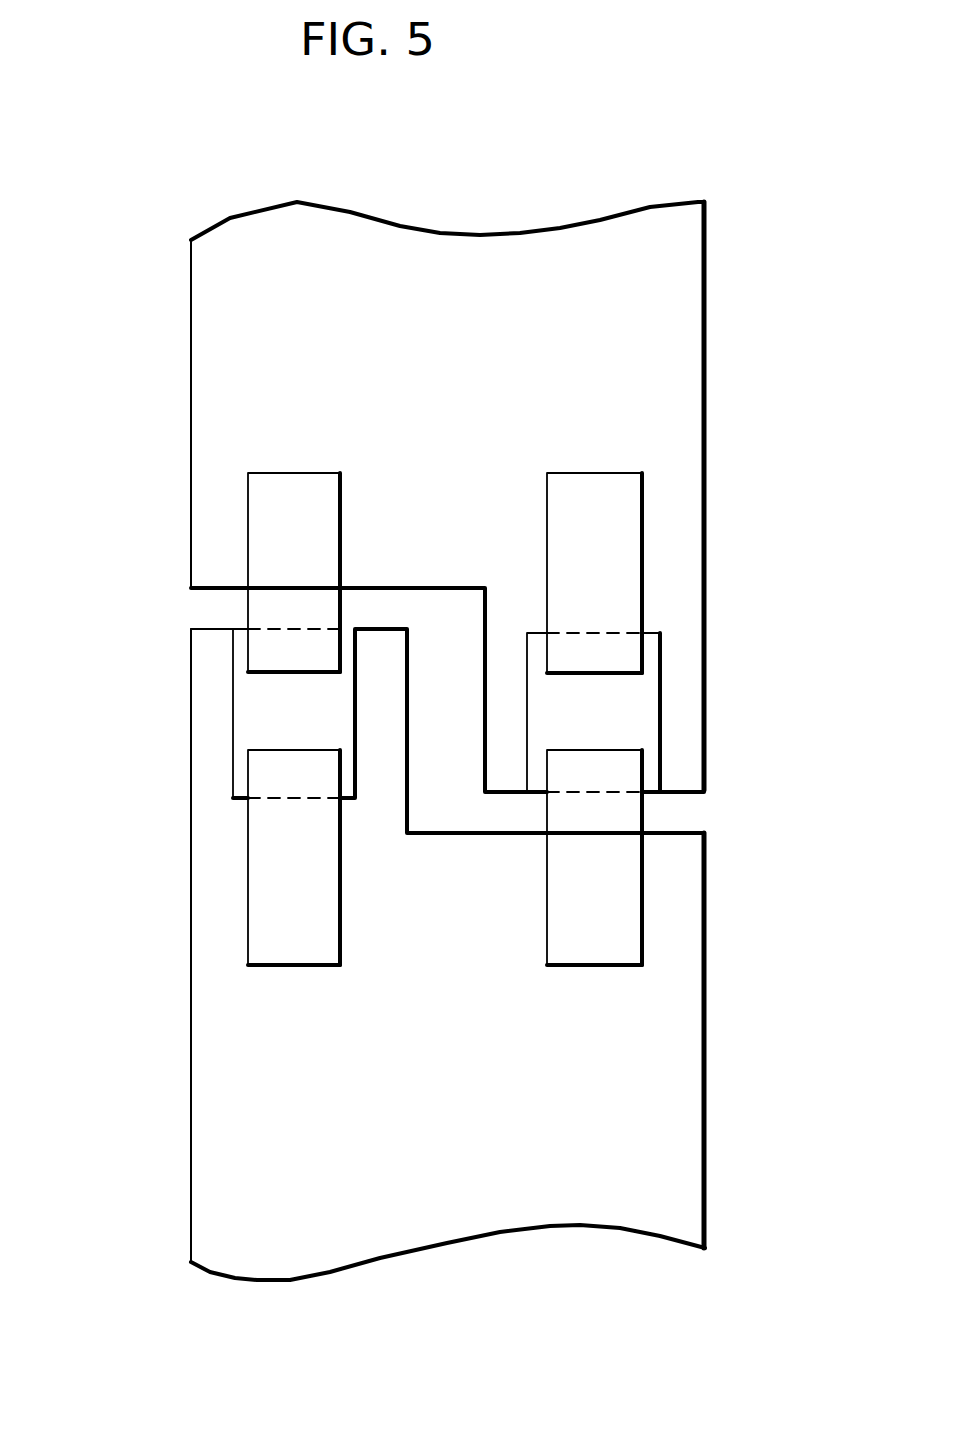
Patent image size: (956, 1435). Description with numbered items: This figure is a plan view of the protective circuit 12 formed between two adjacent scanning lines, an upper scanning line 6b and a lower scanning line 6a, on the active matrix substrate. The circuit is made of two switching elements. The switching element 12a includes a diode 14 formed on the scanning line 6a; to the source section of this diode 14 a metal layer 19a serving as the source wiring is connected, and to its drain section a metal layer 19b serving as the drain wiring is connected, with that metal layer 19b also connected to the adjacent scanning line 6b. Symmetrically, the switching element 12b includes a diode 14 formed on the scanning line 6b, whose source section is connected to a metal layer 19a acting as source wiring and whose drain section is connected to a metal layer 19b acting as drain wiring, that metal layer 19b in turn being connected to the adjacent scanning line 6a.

The scanning line 6a is at (448, 993).
The scanning line 6b is at (447, 450).
The protective circuit 12 is at (494, 643).
The switching element 12a is at (330, 694).
The switching element 12b is at (568, 694).
The diode 14 is at (447, 713).
The metal layer 19a is at (458, 681).
The metal layer 19b is at (454, 682).